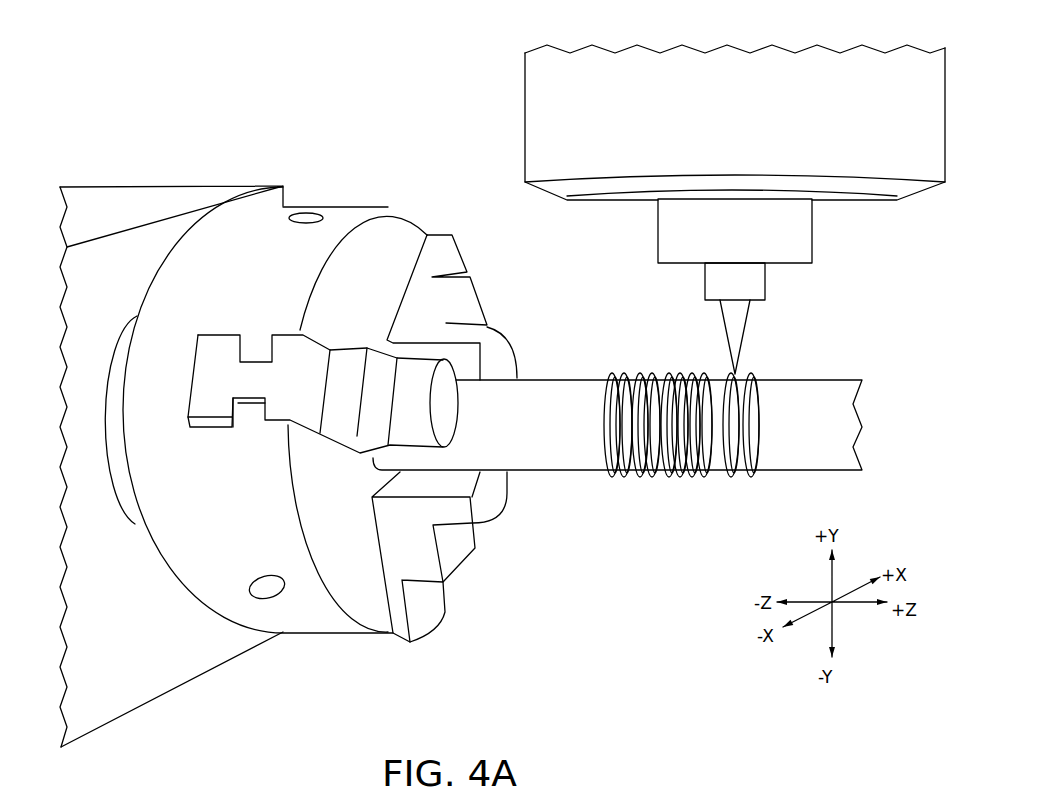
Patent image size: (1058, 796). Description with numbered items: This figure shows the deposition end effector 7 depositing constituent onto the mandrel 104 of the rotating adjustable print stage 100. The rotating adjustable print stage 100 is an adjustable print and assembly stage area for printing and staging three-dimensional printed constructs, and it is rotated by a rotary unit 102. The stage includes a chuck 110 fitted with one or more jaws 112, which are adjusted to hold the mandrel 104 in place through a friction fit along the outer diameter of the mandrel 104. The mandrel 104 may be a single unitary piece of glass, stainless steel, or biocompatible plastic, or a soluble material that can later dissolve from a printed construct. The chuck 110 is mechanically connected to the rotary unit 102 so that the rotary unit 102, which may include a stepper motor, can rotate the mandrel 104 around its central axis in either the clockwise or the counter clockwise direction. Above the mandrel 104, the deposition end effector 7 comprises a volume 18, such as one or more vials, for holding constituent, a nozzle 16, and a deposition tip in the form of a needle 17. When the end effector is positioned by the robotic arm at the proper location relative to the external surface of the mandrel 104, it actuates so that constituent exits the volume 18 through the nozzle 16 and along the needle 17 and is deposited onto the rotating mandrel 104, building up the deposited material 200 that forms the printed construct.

The rotating adjustable print stage 100 is at (170, 145).
The rotary unit 102 is at (152, 688).
The chuck 110 is at (365, 278).
The jaws 112 is at (436, 236).
The mandrel 104 is at (577, 432).
The threads 200 is at (733, 478).
The deposition end effector 7 is at (816, 108).
The volume 18 is at (541, 164).
The nozzle 16 is at (795, 235).
The deposition needle 17 is at (735, 325).